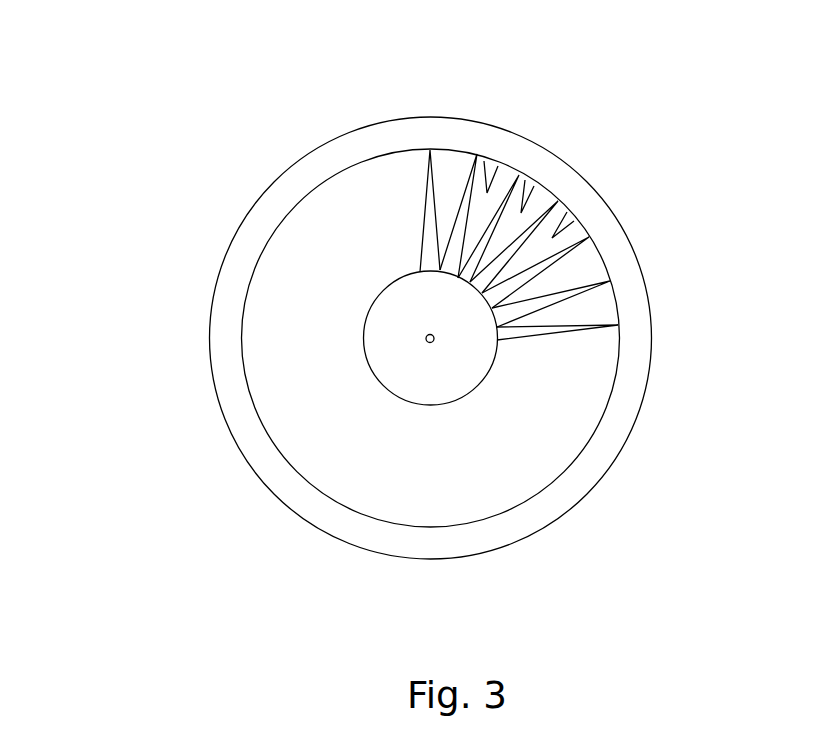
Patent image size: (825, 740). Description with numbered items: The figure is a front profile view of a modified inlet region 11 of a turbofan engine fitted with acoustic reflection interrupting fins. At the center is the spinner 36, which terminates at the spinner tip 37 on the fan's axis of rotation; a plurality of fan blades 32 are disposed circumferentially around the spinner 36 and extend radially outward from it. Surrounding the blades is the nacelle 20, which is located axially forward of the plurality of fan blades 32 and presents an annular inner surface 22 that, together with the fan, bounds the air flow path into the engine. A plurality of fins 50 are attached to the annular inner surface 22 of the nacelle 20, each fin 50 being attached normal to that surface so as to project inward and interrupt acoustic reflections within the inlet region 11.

The modified inlet region 11 is at (170, 123).
The nacelle 20 is at (598, 207).
The annular inner surface 22 is at (520, 215).
The fan blades 32 is at (565, 258).
The spinner 36 is at (448, 392).
The spinner tip 37 is at (425, 345).
The fins 50 is at (503, 170).